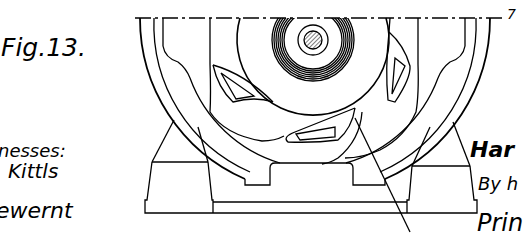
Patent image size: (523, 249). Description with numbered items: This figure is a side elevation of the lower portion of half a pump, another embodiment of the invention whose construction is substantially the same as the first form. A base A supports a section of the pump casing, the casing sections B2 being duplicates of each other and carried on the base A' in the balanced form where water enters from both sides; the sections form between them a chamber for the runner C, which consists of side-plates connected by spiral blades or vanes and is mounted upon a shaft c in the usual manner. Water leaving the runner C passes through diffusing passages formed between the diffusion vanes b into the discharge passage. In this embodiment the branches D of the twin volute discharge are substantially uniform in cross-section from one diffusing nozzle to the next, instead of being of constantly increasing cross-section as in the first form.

The base A is at (311, 198).
The base A' is at (319, 9).
The casing sections B2 is at (410, 46).
The runner C is at (314, 91).
The hub shaft c is at (319, 43).
The diffusion vanes b is at (240, 100).
The branches of the twin volute discharge D is at (240, 135).